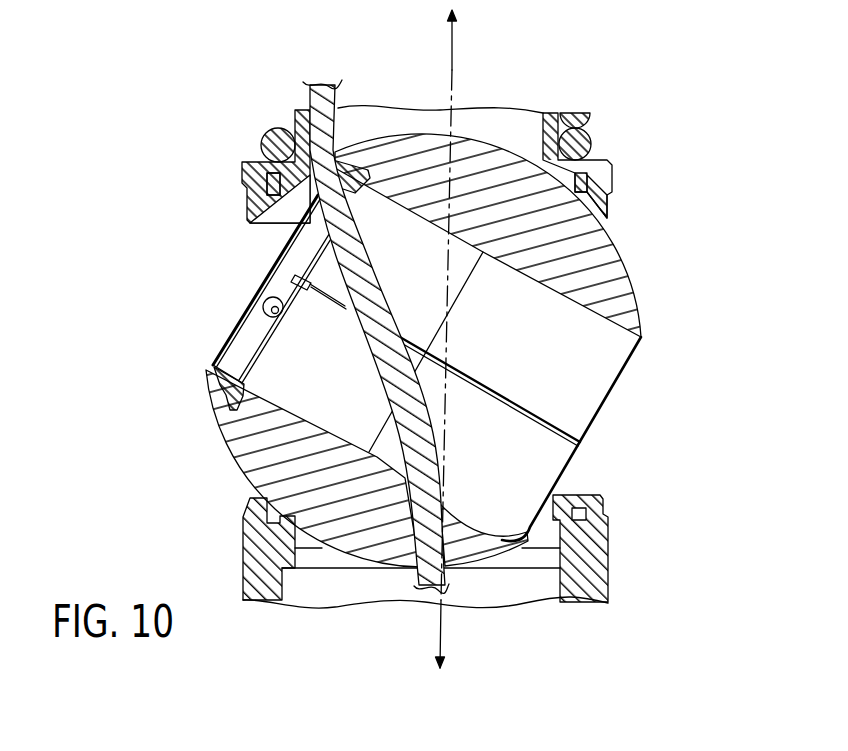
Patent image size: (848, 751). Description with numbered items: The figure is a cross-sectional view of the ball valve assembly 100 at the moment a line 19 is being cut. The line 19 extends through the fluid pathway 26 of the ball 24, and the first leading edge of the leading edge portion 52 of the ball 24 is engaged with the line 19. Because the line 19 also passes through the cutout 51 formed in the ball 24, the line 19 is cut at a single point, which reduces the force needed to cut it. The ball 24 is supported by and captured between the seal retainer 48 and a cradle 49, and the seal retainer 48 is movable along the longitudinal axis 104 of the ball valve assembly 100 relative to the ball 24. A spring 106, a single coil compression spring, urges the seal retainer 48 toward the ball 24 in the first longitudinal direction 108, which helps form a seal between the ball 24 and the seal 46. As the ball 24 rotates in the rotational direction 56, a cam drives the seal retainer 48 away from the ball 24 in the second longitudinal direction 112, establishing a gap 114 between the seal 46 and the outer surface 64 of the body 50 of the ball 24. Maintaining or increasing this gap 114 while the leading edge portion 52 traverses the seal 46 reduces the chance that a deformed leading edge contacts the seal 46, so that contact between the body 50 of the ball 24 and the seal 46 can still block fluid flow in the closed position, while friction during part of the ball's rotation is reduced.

The ball valve assembly 100 is at (148, 333).
The line 19 is at (428, 422).
The ball 24 is at (250, 455).
The fluid pathway 26 is at (592, 385).
The seal 46 is at (585, 192).
The seal retainer 48 is at (603, 178).
The cradle 49 is at (590, 572).
The body 50 is at (627, 307).
The cutout 51 is at (474, 545).
The leading edge portion 52 is at (345, 128).
The rotational direction 56 is at (192, 248).
The outer surface 64 is at (640, 318).
The longitudinal axis 104 is at (452, 97).
The spring 106 is at (587, 138).
The first longitudinal direction 108 is at (440, 628).
The second longitudinal direction 112 is at (452, 48).
The gap 114 is at (238, 226).